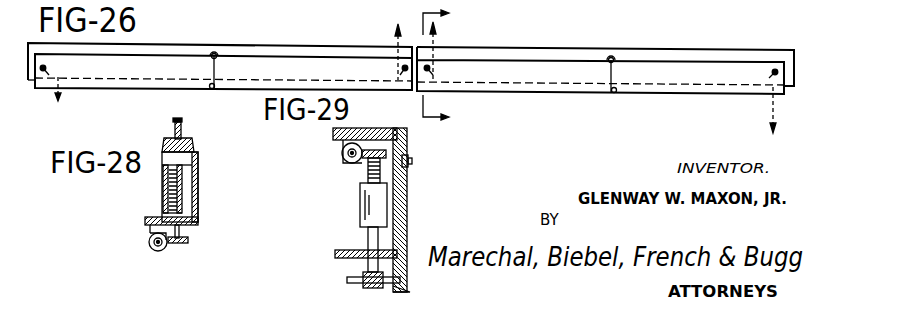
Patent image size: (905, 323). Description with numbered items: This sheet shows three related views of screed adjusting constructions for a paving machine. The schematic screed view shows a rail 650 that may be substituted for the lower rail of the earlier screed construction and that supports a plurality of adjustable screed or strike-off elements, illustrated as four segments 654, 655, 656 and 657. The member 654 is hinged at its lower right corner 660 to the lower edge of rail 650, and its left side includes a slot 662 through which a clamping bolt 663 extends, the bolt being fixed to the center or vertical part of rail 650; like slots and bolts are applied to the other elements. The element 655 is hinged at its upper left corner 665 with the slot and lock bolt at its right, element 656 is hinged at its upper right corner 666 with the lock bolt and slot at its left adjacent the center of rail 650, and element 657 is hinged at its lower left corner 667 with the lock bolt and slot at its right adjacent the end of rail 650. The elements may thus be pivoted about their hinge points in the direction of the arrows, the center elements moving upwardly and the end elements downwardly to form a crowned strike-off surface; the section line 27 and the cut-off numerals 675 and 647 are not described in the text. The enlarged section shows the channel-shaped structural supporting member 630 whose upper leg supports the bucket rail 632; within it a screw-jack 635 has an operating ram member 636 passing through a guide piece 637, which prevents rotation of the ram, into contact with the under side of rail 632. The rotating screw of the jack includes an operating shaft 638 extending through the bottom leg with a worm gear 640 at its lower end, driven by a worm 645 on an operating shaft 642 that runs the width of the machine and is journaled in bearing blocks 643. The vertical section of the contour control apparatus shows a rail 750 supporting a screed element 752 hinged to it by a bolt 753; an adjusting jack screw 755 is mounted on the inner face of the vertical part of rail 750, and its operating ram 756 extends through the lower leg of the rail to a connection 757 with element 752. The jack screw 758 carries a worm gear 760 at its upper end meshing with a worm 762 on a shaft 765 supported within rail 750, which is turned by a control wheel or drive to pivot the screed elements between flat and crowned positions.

In FIG. 26, the rail 650 is at (314, 50).
In FIG. 26, the screed segment 654 is at (168, 62).
In FIG. 26, the screed element 655 is at (265, 64).
In FIG. 26, the screed element 656 is at (540, 62).
In FIG. 26, the screed element 657 is at (697, 70).
In FIG. 26, the lower right corner hinge 660 is at (212, 89).
In FIG. 26, the slot 662 is at (42, 72).
In FIG. 26, the clamping bolt 663 is at (46, 68).
In FIG. 26, the upper left corner hinge 665 is at (214, 53).
In FIG. 26, the upper right corner hinge 666 is at (609, 57).
In FIG. 26, the lower left corner hinge 667 is at (615, 92).
In FIG. 26, the section line 27 is at (422, 64).
In FIG. 26, the bar element 675 is at (623, 4).
In FIG. 26, the bar element 647 is at (781, 6).
In FIG. 28, the structural supporting member 630 is at (198, 186).
In FIG. 28, the bucket rail 632 is at (176, 122).
In FIG. 28, the screw-jack 635 is at (158, 194).
In FIG. 28, the operating ram member 636 is at (186, 160).
In FIG. 28, the guide piece 637 is at (194, 150).
In FIG. 28, the operating shaft 638 is at (180, 228).
In FIG. 28, the worm gear 640 is at (188, 241).
In FIG. 28, the operating shaft 642 is at (151, 247).
In FIG. 28, the bearing block 643 is at (150, 230).
In FIG. 28, the worm 645 is at (163, 250).
In FIG. 29, the rail 750 is at (399, 135).
In FIG. 29, the screed element 752 is at (409, 208).
In FIG. 29, the bolt 753 is at (412, 162).
In FIG. 29, the adjusting jack screw 755 is at (352, 214).
In FIG. 29, the operating ram 756 is at (370, 244).
In FIG. 29, the connection 757 is at (352, 271).
In FIG. 29, the jack screw 758 is at (366, 175).
In FIG. 29, the worm gear 760 is at (376, 149).
In FIG. 29, the worm 762 is at (346, 160).
In FIG. 29, the shaft 765 is at (341, 151).